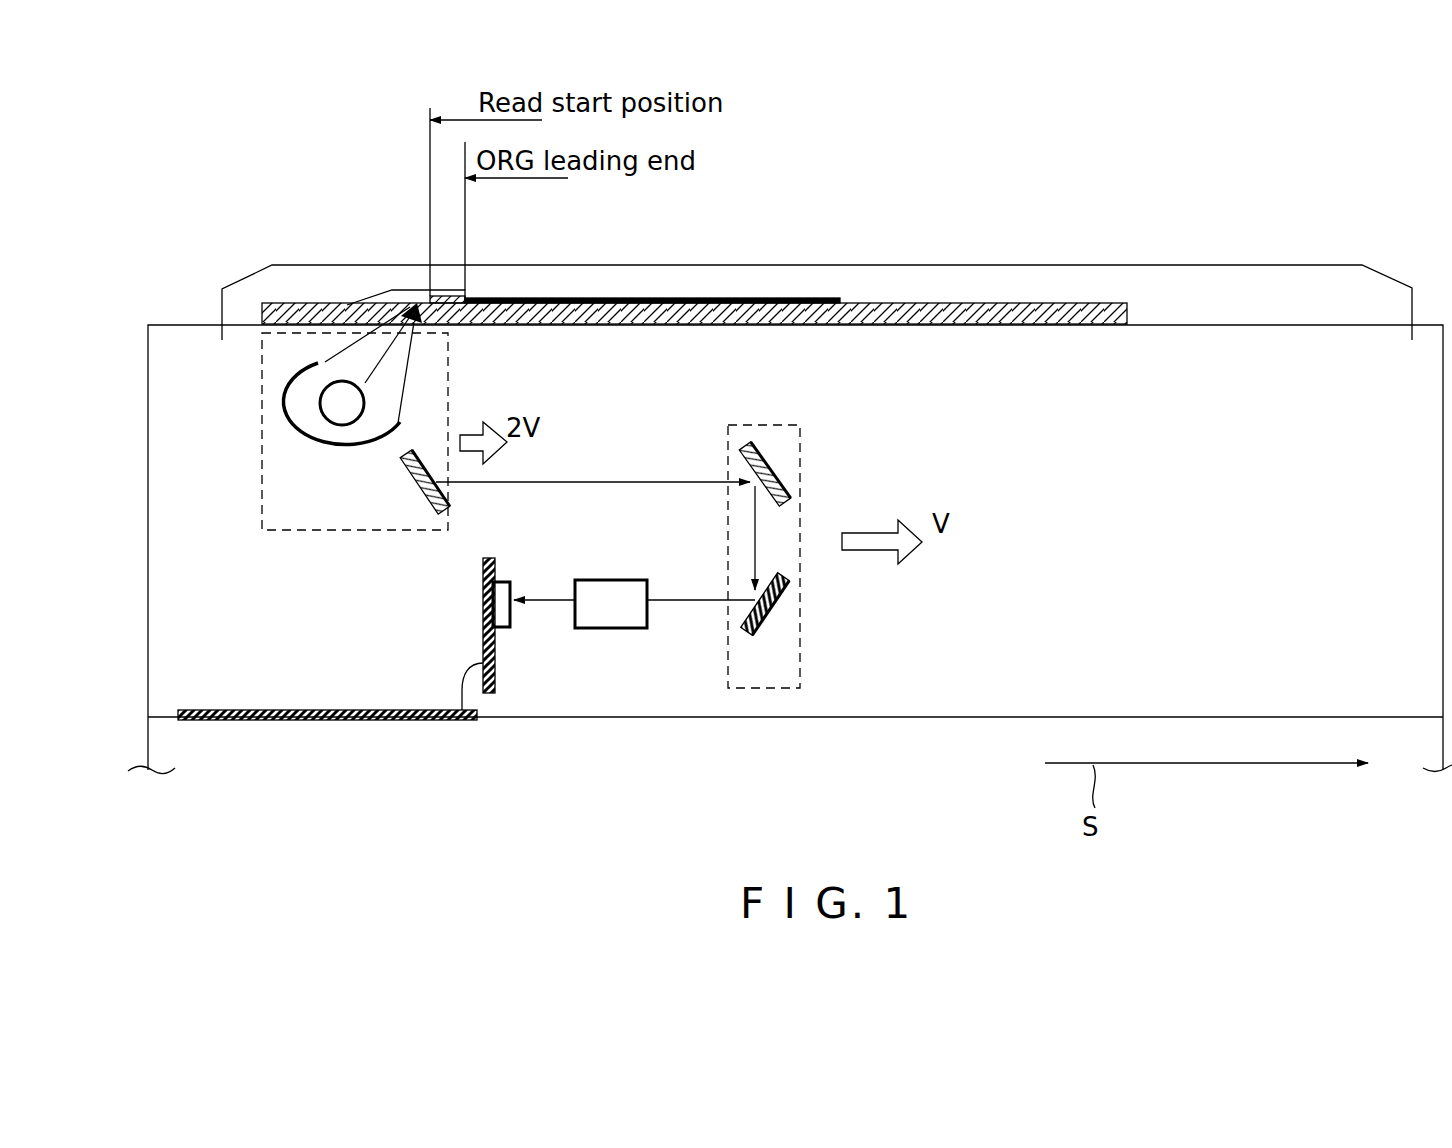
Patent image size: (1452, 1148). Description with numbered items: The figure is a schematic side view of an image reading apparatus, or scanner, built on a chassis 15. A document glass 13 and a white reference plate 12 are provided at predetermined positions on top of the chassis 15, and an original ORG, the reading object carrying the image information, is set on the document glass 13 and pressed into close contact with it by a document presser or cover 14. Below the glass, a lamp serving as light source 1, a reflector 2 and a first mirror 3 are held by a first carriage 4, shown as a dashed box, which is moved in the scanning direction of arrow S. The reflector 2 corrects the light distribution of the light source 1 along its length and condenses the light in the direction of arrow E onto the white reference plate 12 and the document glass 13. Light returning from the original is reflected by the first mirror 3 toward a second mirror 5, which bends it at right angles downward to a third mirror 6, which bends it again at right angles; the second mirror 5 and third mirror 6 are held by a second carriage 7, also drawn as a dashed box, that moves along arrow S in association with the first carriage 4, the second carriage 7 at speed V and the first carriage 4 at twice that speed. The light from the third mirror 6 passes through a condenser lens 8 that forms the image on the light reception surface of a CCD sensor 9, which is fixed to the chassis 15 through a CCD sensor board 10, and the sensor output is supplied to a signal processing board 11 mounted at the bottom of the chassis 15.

The lamp (light source) 1 is at (335, 398).
The reflector 2 is at (327, 448).
The first mirror 3 is at (432, 507).
The first carriage 4 is at (262, 474).
The second mirror 5 is at (790, 500).
The third mirror 6 is at (780, 613).
The second carriage 7 is at (774, 423).
The condenser lens (magnification setting lens) 8 is at (614, 580).
The CCD sensor 9 is at (512, 580).
The drive circuit board (CCD sensor board) 10 is at (483, 643).
The signal processing board 11 is at (288, 710).
The white reference plate 12 is at (447, 294).
The document glass 13 is at (1038, 324).
The document presser (cover) 14 is at (1050, 265).
The chassis 15 is at (1395, 718).
The original ORG is at (840, 298).
The arrow E (direction of condensed light) E is at (385, 357).